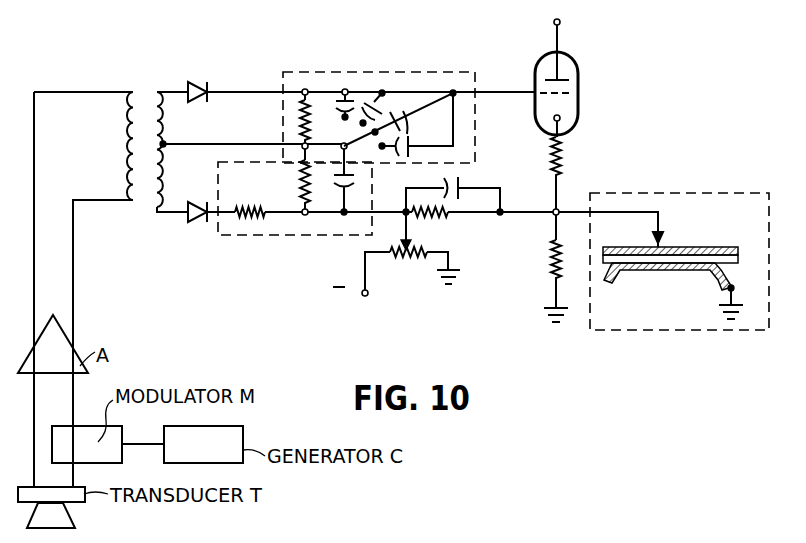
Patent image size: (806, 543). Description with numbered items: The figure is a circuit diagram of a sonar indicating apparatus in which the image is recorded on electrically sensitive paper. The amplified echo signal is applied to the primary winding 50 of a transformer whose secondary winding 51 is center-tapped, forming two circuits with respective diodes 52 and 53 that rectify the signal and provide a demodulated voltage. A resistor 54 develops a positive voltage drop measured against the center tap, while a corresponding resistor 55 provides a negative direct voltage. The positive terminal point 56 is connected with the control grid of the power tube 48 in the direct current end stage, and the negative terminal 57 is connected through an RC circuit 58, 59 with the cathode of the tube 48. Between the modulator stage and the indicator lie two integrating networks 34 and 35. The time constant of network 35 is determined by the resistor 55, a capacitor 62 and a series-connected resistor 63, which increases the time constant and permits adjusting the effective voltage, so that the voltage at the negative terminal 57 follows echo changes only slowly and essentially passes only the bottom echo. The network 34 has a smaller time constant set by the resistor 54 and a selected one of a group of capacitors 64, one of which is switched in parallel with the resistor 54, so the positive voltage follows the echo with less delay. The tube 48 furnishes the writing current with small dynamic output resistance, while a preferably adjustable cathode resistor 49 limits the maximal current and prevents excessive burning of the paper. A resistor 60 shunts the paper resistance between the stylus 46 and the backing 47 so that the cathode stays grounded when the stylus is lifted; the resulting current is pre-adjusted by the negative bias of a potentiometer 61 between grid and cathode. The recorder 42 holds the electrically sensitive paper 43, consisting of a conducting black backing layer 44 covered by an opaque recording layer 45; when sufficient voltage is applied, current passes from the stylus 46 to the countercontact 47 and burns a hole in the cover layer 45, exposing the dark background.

The network 34 is at (420, 72).
The network 35 is at (256, 236).
The recorder 42 is at (679, 281).
The electrically sensitive paper 43 is at (738, 262).
The conducting black backing layer 44 is at (702, 247).
The opaque recording layer 45 is at (670, 247).
The stylus 46 is at (657, 242).
The countercontact 47 is at (652, 272).
The power tube 48 is at (535, 68).
The cathode resistor 49 is at (561, 170).
The primary winding 50 is at (133, 90).
The secondary winding 51 is at (158, 90).
The diode 52 is at (200, 80).
The diode 53 is at (200, 200).
The resistor 54 is at (298, 100).
The resistor 55 is at (300, 178).
The positive terminal point 56 is at (304, 89).
The negative terminal 57 is at (305, 216).
The resistor of RC circuit 58 is at (448, 216).
The capacitor of RC circuit 59 is at (460, 180).
The resistor 60 is at (553, 250).
The potentiometer 61 is at (410, 244).
The capacitor 62 is at (360, 182).
The series-connected resistor 63 is at (235, 207).
The group of capacitors 64 is at (350, 92).